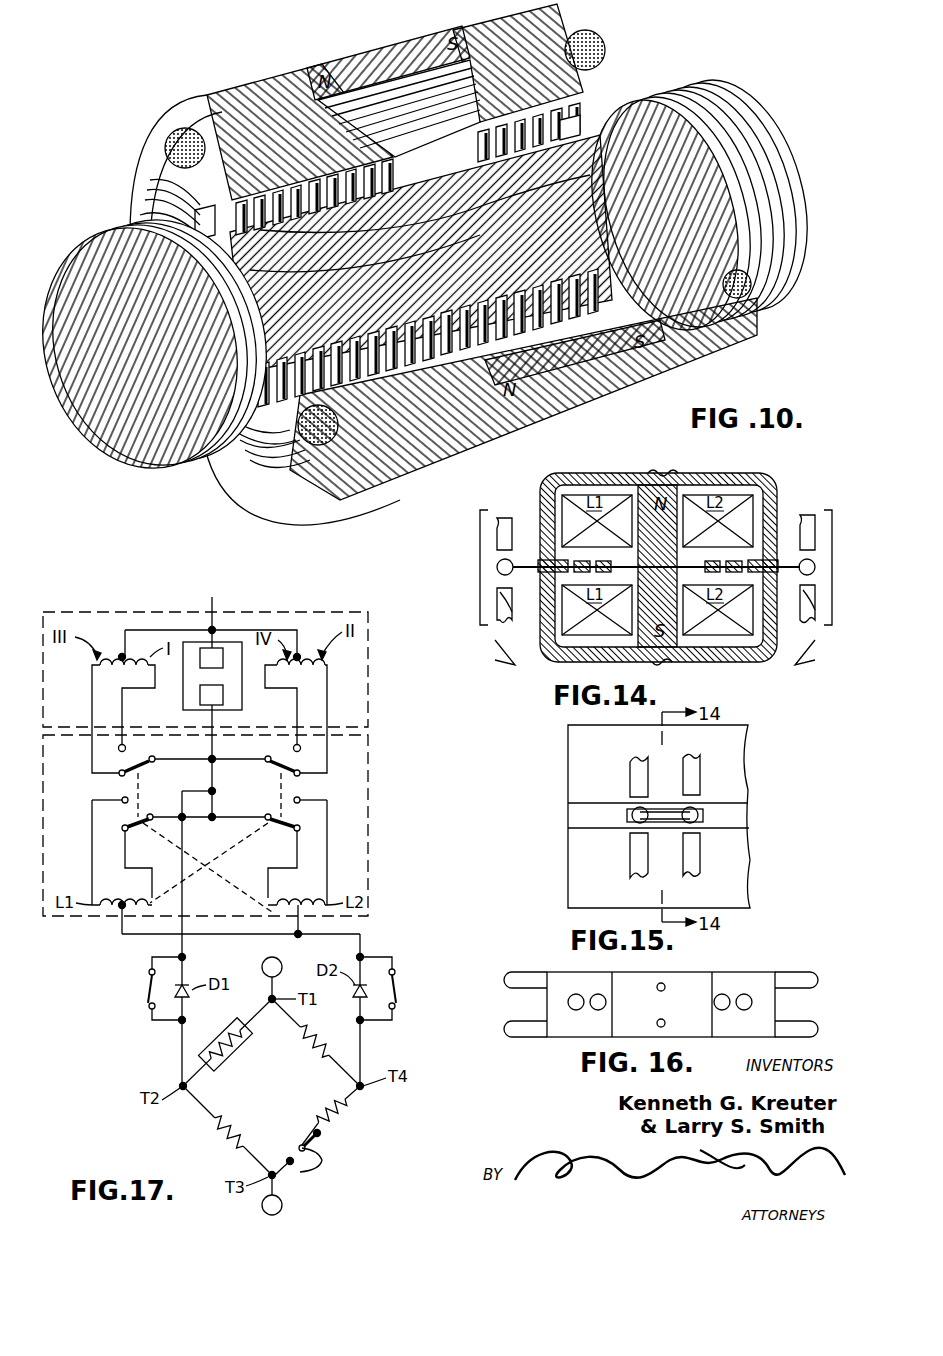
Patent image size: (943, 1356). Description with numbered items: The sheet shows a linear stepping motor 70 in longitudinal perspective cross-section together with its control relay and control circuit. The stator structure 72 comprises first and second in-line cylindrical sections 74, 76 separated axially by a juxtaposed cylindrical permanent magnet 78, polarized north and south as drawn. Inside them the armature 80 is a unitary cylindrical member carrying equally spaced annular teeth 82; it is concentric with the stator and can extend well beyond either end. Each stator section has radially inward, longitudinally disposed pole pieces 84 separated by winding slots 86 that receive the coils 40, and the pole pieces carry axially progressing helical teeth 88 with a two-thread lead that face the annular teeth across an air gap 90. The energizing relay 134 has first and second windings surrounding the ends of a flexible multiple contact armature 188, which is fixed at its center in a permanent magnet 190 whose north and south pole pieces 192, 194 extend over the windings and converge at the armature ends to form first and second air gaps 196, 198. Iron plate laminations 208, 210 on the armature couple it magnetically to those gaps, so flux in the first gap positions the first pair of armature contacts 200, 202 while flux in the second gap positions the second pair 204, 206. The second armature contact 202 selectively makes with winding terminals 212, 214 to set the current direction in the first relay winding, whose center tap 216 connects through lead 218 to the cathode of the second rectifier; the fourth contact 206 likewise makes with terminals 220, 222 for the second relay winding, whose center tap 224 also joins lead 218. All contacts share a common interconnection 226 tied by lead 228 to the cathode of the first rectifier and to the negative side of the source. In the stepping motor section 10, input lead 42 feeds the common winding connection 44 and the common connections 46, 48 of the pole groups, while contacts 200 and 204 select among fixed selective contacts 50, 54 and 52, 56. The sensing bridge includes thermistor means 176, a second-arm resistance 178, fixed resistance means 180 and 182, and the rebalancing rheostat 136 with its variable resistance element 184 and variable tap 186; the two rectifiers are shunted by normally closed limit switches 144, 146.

In FIG. 10, the linear stepping motor 70 is at (497, 17).
In FIG. 10, the stator structure 72 is at (262, 78).
In FIG. 10, the first cylindrical stator section 74 is at (279, 138).
In FIG. 10, the second cylindrical stator section 76 is at (522, 73).
In FIG. 10, the cylindrical permanent magnet 78 is at (388, 62).
In FIG. 10, the armature 80 is at (462, 218).
In FIG. 10, the annular teeth 82 is at (720, 95).
In FIG. 10, the pole pieces 84 is at (160, 180).
In FIG. 10, the winding slots 86 is at (165, 215).
In FIG. 10, the helical teeth 88 is at (318, 208).
In FIG. 10, the air gap 90 is at (578, 112).
In FIG. 10, the coil 40 is at (168, 150).
In FIG. 17, the stepping motor section 10 is at (372, 628).
In FIG. 17, the energizing relay 134 is at (372, 758).
In FIG. 17, the motor input lead 42 is at (216, 642).
In FIG. 17, the common winding pole group connection 44 is at (214, 600).
In FIG. 17, the common connection 46 is at (122, 655).
In FIG. 17, the common connection 48 is at (297, 655).
In FIG. 14, the fixed selective contact 50 is at (497, 540).
In FIG. 17, the fixed selective contact 50 is at (125, 745).
In FIG. 14, the fixed selective contact 52 is at (816, 606).
In FIG. 17, the fixed selective contact 52 is at (305, 773).
In FIG. 14, the fixed selective contact 54 is at (512, 600).
In FIG. 17, the fixed selective contact 54 is at (115, 773).
In FIG. 14, the fixed selective contact 56 is at (816, 540).
In FIG. 17, the fixed selective contact 56 is at (300, 745).
In FIG. 14, the flexible multiple contact armature 188 is at (612, 572).
In FIG. 16, the flexible multiple contact armature 188 is at (704, 997).
In FIG. 14, the permanent magnet 190 is at (665, 495).
In FIG. 14, the north pole piece 192 is at (725, 478).
In FIG. 14, the south pole piece 194 is at (570, 658).
In FIG. 14, the first air gap 196 is at (535, 555).
In FIG. 14, the second air gap 198 is at (782, 555).
In FIG. 14, the first armature contact 200 is at (497, 567).
In FIG. 16, the first armature contact 200 is at (500, 980).
In FIG. 17, the first armature contact 200 is at (142, 768).
In FIG. 16, the second armature contact 202 is at (503, 1029).
In FIG. 17, the second armature contact 202 is at (138, 832).
In FIG. 14, the third armature contact 204 is at (812, 567).
In FIG. 15, the third armature contact 204 is at (698, 818).
In FIG. 16, the third armature contact 204 is at (830, 980).
In FIG. 17, the third armature contact 204 is at (275, 768).
In FIG. 15, the fourth armature contact 206 is at (634, 808).
In FIG. 16, the fourth armature contact 206 is at (825, 1028).
In FIG. 17, the fourth armature contact 206 is at (286, 832).
In FIG. 14, the first iron plate lamination 208 is at (597, 565).
In FIG. 16, the first iron plate lamination 208 is at (574, 1022).
In FIG. 14, the second iron plate lamination 210 is at (718, 565).
In FIG. 16, the second iron plate lamination 210 is at (744, 1022).
In FIG. 17, the first winding terminal 212 is at (120, 799).
In FIG. 17, the second winding terminal 214 is at (118, 829).
In FIG. 17, the center tap 216 is at (121, 910).
In FIG. 17, the lead 218 is at (238, 936).
In FIG. 15, the second winding terminal 220 is at (692, 778).
In FIG. 17, the second winding terminal 220 is at (302, 798).
In FIG. 15, the third winding terminal 222 is at (692, 855).
In FIG. 17, the third winding terminal 222 is at (304, 828).
In FIG. 17, the center tap 224 is at (275, 912).
In FIG. 17, the common electrical interconnection 226 is at (215, 791).
In FIG. 17, the lead 228 is at (185, 842).
In FIG. 17, the rebalancing rheostat 136 is at (312, 1162).
In FIG. 17, the first limit switch 144 is at (146, 985).
In FIG. 17, the second limit switch 146 is at (397, 982).
In FIG. 17, the thermistor means 176 is at (238, 1050).
In FIG. 17, the resistor 178 is at (226, 1120).
In FIG. 17, the fixed resistance means 180 is at (312, 1058).
In FIG. 17, the fixed resistance means 182 is at (330, 1103).
In FIG. 17, the variable resistance element 184 is at (302, 1168).
In FIG. 17, the variable tap 186 is at (298, 1147).